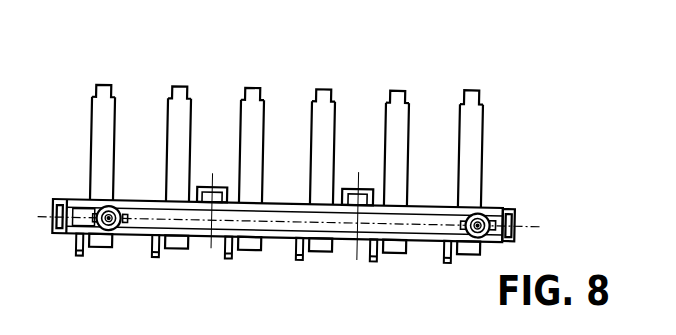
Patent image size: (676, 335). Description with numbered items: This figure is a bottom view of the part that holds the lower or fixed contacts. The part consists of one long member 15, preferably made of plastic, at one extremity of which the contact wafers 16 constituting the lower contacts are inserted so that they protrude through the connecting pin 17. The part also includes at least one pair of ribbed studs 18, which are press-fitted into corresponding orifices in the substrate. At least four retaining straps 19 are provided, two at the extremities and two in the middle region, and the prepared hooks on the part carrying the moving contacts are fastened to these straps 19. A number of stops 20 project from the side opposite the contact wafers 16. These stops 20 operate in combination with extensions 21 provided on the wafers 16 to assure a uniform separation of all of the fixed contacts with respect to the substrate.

The long member 15 is at (422, 228).
The contact wafers 16 is at (398, 163).
The connecting pin 17 is at (368, 251).
The ribbed studs 18 is at (110, 228).
The retaining straps 19 is at (57, 198).
The stops 20 is at (298, 254).
The extensions 21 is at (470, 107).